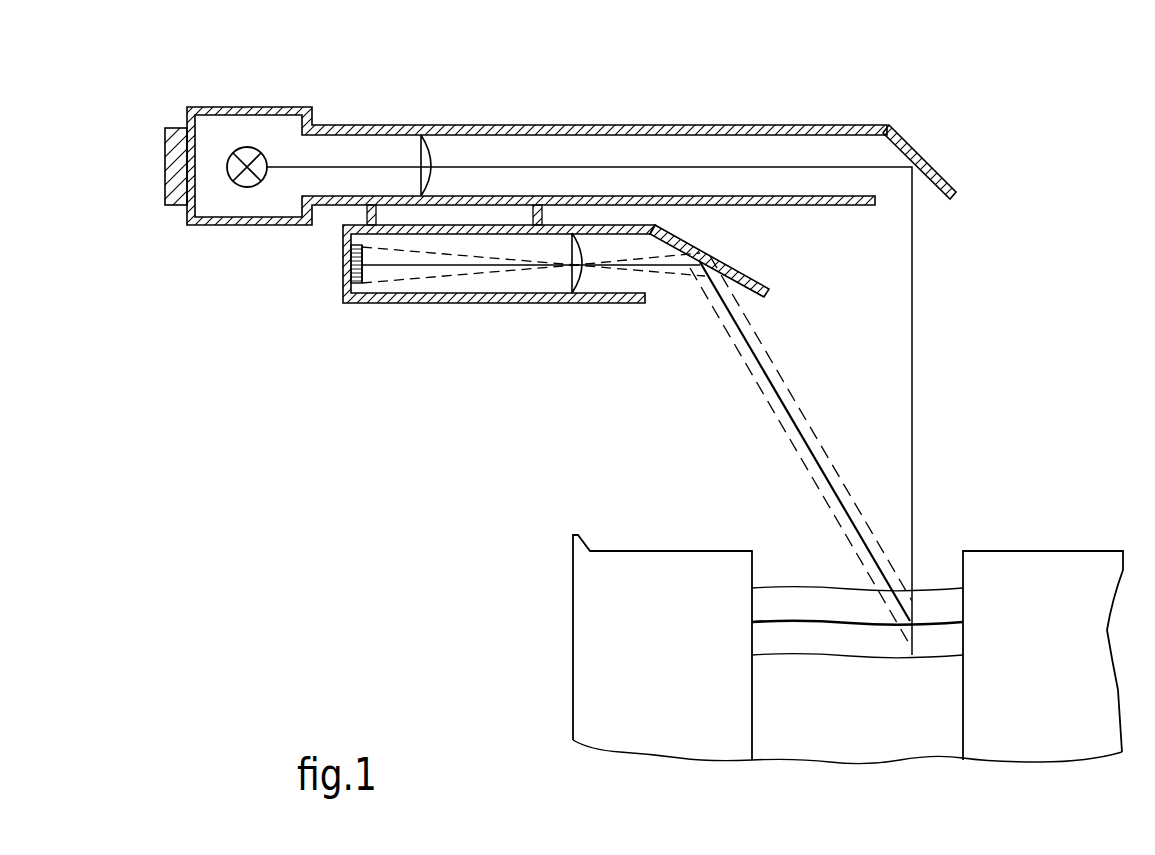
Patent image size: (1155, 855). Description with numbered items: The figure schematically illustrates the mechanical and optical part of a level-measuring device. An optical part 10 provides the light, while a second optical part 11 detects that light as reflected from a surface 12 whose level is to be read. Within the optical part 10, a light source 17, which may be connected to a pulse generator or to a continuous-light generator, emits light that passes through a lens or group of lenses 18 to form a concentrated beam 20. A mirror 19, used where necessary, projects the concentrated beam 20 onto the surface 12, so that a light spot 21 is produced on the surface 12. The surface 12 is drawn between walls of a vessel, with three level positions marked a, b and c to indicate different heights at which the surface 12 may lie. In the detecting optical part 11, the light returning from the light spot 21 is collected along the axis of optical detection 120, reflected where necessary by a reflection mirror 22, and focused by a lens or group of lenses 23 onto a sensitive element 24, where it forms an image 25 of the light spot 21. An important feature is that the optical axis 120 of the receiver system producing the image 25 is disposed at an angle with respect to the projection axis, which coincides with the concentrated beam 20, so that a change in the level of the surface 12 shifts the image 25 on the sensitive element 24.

The optical part 10 is at (150, 185).
The optical part 11 is at (501, 328).
The surface 12 is at (848, 686).
The light source 17 is at (253, 152).
The lens 18 is at (426, 152).
The mirror 19 is at (917, 160).
The concentrated beam 20 is at (607, 165).
The light spot 21 is at (857, 719).
The reflection mirror 22 is at (757, 284).
The lens 23 is at (577, 295).
The sensitive element 24 is at (343, 293).
The image of the light spot 25 is at (363, 266).
The axis of optical detection 120 is at (807, 443).
The upper liquid level a is at (857, 579).
The nominal liquid level b is at (912, 625).
The lower liquid level c is at (833, 622).